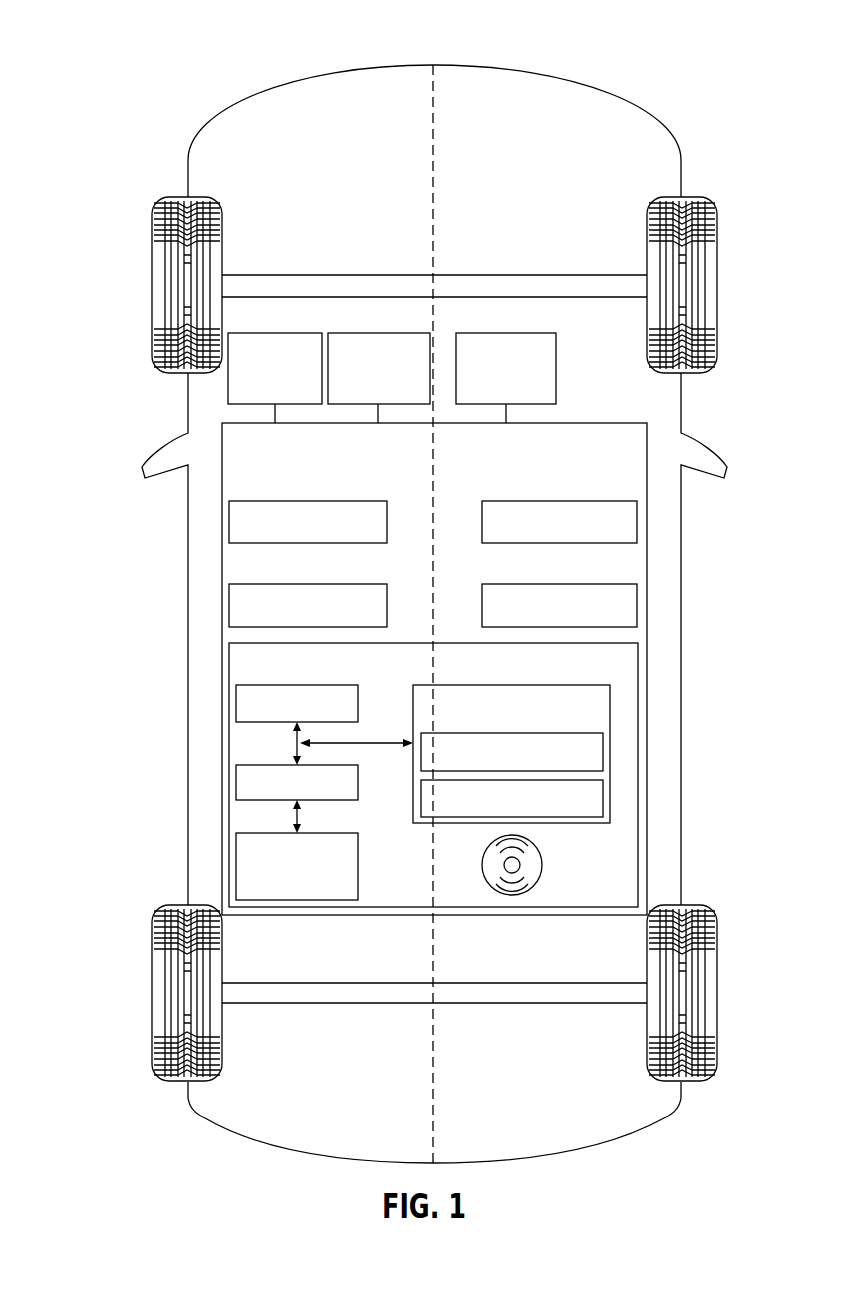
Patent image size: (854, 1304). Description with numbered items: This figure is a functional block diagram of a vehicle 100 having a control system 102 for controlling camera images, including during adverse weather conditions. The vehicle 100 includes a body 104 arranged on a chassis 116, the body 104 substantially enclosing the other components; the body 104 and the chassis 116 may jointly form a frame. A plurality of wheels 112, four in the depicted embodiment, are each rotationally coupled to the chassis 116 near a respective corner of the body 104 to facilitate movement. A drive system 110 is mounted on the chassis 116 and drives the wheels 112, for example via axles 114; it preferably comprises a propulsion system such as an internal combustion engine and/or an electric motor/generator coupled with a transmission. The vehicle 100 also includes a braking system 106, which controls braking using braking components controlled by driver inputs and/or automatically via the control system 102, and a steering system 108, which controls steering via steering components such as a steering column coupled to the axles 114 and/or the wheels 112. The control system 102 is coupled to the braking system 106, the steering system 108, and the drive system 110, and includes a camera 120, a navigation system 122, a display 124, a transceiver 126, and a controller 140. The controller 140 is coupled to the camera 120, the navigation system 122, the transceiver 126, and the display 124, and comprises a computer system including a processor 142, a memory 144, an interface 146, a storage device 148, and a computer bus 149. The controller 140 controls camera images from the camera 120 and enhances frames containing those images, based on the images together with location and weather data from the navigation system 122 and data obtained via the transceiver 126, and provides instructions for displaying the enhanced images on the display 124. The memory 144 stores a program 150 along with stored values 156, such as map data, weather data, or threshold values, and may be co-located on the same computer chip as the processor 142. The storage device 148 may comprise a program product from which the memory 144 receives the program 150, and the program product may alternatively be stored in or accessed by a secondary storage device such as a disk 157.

The vehicle 100 is at (680, 48).
The control system 102 is at (590, 423).
The body 104 is at (190, 515).
The braking system 106 is at (297, 332).
The steering system 108 is at (395, 332).
The drive system 110 is at (505, 332).
The wheels 112 is at (152, 267).
The axles 114 is at (300, 283).
The chassis 116 is at (440, 116).
The camera 120 is at (302, 500).
The navigation system 122 is at (302, 584).
The display 124 is at (572, 500).
The transceiver 126 is at (572, 584).
The controller 140 is at (229, 669).
The processor 142 is at (236, 702).
The memory 144 is at (610, 703).
The interface 146 is at (236, 785).
The storage device 148 is at (236, 848).
The computer bus 149 is at (297, 743).
The program 150 is at (603, 747).
The stored values 156 is at (603, 795).
The disk 157 is at (541, 865).